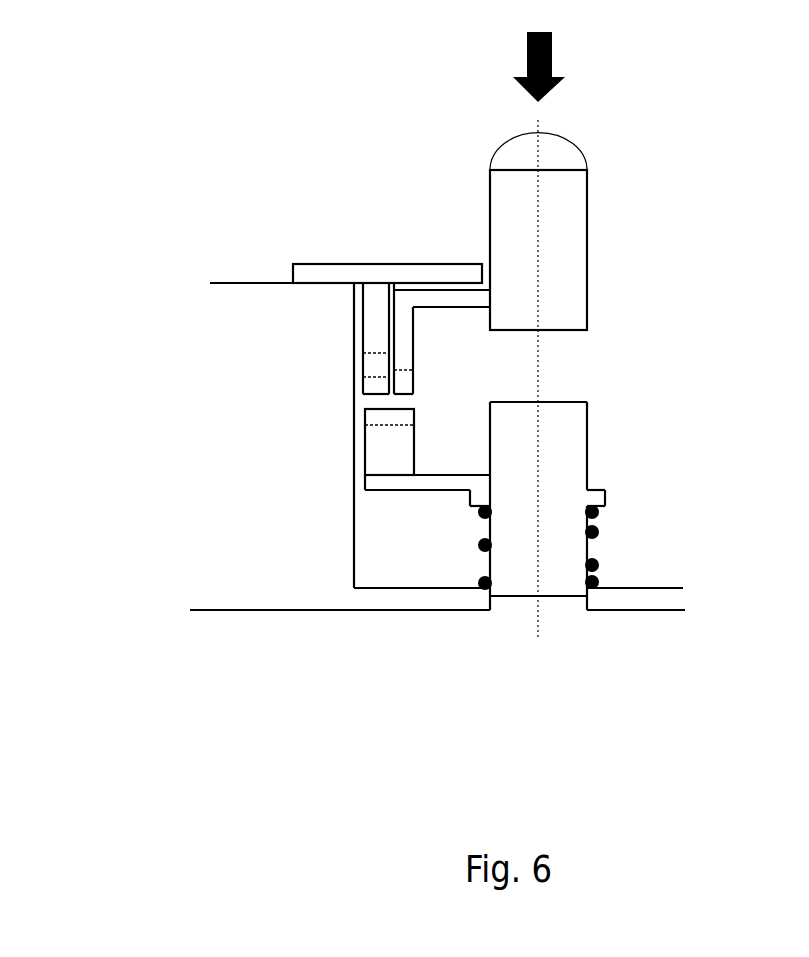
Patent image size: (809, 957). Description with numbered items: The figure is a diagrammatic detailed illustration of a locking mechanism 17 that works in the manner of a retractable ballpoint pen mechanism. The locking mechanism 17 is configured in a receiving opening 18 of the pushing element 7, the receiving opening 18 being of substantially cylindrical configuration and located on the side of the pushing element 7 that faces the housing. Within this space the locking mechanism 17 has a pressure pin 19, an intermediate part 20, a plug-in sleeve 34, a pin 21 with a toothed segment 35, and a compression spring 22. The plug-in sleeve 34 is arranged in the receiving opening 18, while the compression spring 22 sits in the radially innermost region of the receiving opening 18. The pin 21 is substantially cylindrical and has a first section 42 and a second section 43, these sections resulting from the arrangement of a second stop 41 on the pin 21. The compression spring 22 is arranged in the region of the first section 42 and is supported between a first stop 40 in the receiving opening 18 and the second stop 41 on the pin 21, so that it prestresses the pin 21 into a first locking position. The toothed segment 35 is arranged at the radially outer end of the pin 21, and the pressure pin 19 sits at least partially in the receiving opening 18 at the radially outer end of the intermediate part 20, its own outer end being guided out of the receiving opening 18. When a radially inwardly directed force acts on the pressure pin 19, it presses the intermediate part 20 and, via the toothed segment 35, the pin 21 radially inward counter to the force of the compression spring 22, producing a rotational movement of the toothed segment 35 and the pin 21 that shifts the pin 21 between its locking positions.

The locking mechanism 17 is at (112, 169).
The receiving opening 18 is at (343, 351).
The plug-in sleeve 34 is at (352, 272).
The pushing element 7 is at (243, 360).
The intermediate part 20 is at (405, 338).
The toothed segment 35 is at (401, 454).
The pressure pin 19 is at (563, 193).
The pin 21 is at (624, 540).
The second section 43 is at (565, 435).
The first section 42 is at (548, 558).
The second stop 41 is at (603, 493).
The compression spring 22 is at (600, 525).
The first stop 40 is at (603, 598).